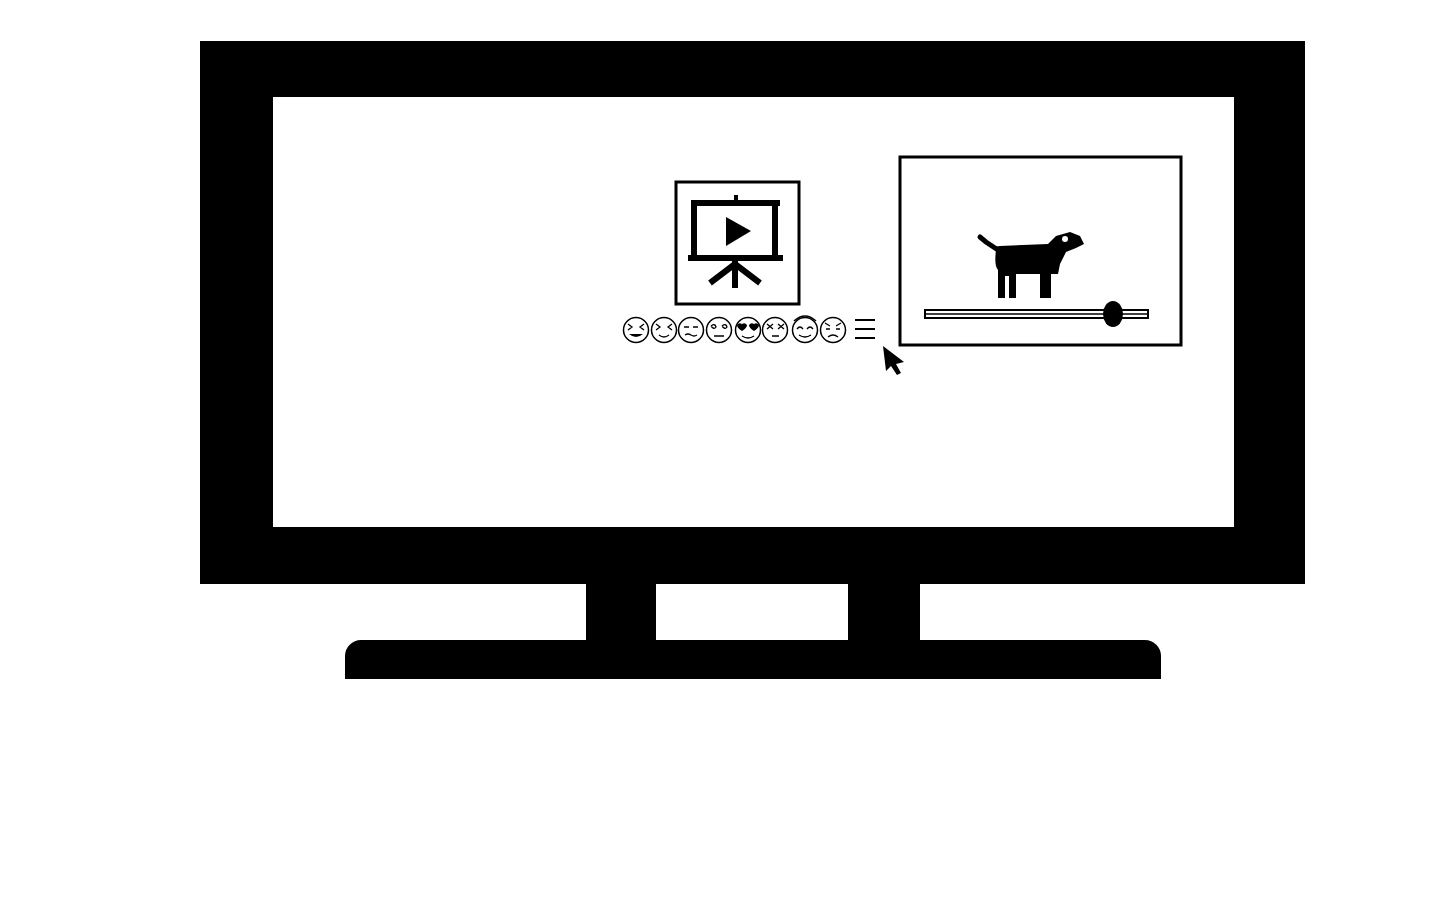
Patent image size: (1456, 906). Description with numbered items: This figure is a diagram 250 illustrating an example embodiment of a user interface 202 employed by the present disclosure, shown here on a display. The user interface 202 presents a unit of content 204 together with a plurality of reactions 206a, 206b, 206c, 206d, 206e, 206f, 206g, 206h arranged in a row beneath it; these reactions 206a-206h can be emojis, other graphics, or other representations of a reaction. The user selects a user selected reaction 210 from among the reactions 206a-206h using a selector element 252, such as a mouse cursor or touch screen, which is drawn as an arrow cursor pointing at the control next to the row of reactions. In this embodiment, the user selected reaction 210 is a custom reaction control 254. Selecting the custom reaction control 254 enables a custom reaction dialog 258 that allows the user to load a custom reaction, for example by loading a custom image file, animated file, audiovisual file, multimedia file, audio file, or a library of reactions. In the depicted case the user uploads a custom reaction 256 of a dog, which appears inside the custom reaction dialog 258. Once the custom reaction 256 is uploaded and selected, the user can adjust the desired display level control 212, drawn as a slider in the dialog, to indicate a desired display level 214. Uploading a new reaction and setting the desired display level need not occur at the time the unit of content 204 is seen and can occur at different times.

The diagram 250 is at (217, 793).
The user interface 202 is at (1299, 400).
The unit of content 204 is at (653, 217).
The reaction 206a is at (606, 305).
The reaction 206b is at (655, 335).
The reaction 206c is at (683, 338).
The reaction 206d is at (711, 338).
The reaction 206e is at (740, 338).
The reaction 206f is at (767, 338).
The reaction 206g is at (797, 338).
The reaction 206h is at (843, 333).
The user selected reaction 210 is at (847, 303).
The desired display level control 212 is at (941, 302).
The desired display level 214 is at (1106, 318).
The selector element 252 is at (902, 363).
The custom reaction control 254 is at (855, 302).
The custom reaction 256 is at (1100, 352).
The custom reaction dialog 258 is at (1082, 132).